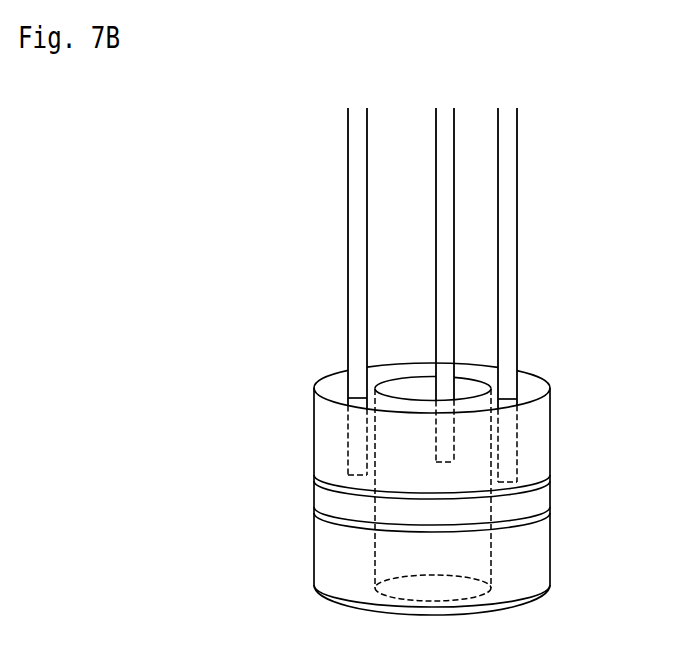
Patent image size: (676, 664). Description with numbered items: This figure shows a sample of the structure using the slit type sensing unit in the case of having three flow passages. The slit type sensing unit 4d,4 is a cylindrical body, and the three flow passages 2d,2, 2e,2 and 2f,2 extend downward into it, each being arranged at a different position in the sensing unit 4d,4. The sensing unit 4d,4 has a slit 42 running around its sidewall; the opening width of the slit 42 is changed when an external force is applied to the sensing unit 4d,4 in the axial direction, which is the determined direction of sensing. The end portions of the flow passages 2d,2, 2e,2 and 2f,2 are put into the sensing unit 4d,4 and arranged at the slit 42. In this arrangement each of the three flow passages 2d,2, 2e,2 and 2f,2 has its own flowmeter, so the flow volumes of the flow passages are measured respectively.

The flow passage 2d,2 is at (347, 211).
The flow passage 2e,2 is at (435, 192).
The flow passage 2f,2 is at (518, 208).
The slit type sensing unit 4d,4 is at (313, 433).
The slit 42 is at (314, 468).